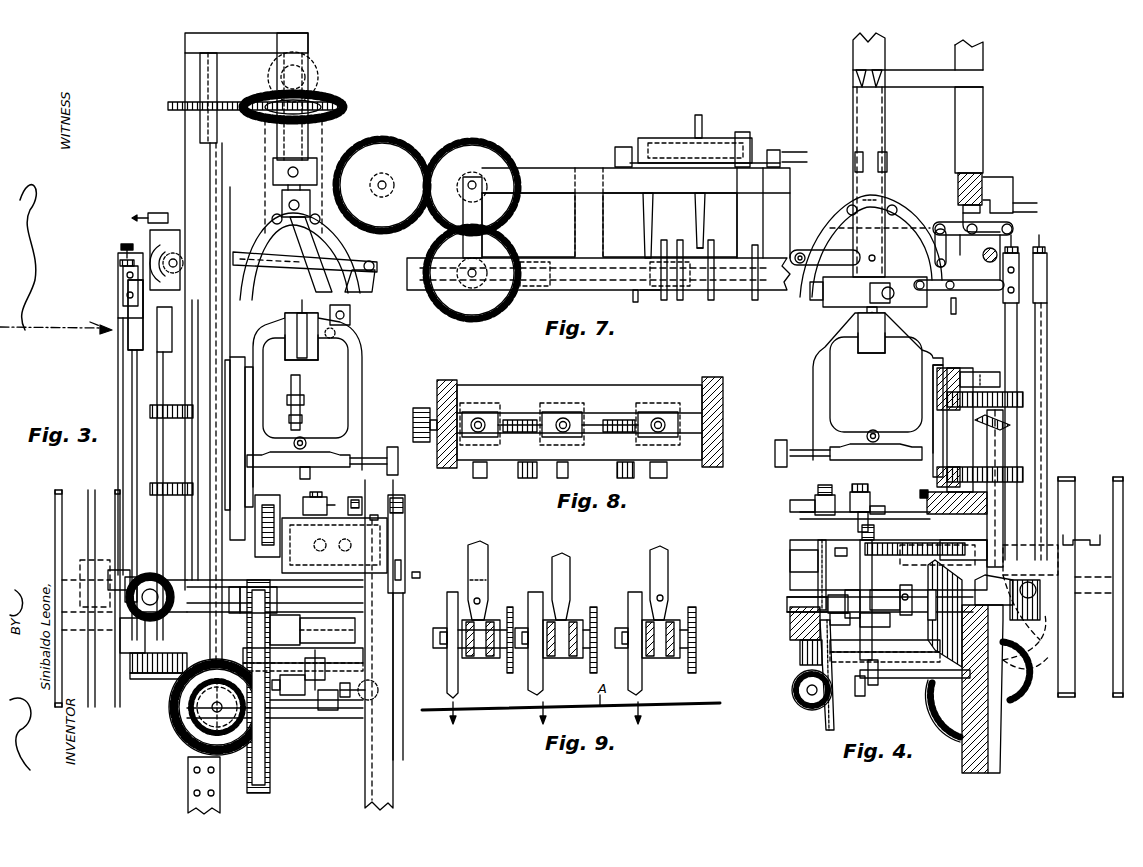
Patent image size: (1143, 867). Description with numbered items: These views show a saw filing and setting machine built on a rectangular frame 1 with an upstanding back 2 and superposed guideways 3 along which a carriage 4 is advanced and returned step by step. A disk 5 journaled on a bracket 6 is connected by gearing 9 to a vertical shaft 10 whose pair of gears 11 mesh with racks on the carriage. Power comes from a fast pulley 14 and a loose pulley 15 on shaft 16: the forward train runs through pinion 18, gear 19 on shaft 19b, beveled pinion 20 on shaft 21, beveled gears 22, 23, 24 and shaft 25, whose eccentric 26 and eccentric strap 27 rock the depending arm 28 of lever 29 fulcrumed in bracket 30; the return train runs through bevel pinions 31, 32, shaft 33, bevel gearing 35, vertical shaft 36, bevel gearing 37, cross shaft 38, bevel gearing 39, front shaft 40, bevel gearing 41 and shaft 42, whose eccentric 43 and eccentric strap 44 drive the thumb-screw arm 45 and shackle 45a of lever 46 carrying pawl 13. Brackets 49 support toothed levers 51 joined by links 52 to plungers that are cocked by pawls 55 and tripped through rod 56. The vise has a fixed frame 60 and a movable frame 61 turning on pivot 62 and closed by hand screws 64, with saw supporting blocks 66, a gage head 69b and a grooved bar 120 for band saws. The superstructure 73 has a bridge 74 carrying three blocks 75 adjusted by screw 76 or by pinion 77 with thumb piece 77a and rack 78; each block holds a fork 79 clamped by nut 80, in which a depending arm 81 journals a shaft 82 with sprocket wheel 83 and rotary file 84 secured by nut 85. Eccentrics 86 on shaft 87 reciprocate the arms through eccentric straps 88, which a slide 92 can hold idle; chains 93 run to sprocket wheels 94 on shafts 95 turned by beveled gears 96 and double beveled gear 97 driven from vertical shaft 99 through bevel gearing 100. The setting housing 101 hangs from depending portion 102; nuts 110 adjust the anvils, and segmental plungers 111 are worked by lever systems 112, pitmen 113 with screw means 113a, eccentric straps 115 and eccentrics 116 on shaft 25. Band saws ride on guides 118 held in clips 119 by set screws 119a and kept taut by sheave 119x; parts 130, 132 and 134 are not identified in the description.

In FIG. 3, the rectangular frame 1 is at (396, 742).
In FIG. 3, the upstanding back 2 is at (190, 450).
In FIG. 4, the upstanding back 2 is at (985, 175).
In FIG. 3, the horizontal superposed guideways 3 is at (238, 366).
In FIG. 4, the horizontal superposed guideways 3 is at (960, 470).
In FIG. 3, the carriage 4 is at (253, 436).
In FIG. 4, the carriage 4 is at (933, 436).
In FIG. 4, the disk 5 is at (836, 552).
In FIG. 4, the bracket 6 is at (800, 246).
In FIG. 4, the gearing 9 is at (924, 540).
In FIG. 4, the vertical shaft 10 is at (1000, 432).
In FIG. 3, the pair of gears 11 is at (150, 412).
In FIG. 4, the pair of gears 11 is at (1025, 470).
In FIG. 4, the pawl 13 is at (920, 500).
In FIG. 3, the fast pulley 14 is at (72, 500).
In FIG. 4, the fast pulley 14 is at (1103, 490).
In FIG. 3, the loose pulley 15 is at (103, 500).
In FIG. 4, the loose pulley 15 is at (1072, 490).
In FIG. 3, the shaft 16 is at (216, 612).
In FIG. 3, the pinion 18 is at (252, 612).
In FIG. 3, the gear 19 is at (268, 748).
In FIG. 3, the shaft 19b is at (332, 712).
In FIG. 3, the beveled pinion 20 is at (178, 730).
In FIG. 3, the horizontal shaft 21 is at (175, 693).
In FIG. 4, the beveled gear 22 is at (933, 703).
In FIG. 4, the beveled gear 23 is at (920, 676).
In FIG. 4, the beveled gear 24 is at (935, 655).
In FIG. 4, the horizontal shaft 25 is at (853, 615).
In FIG. 4, the eccentric 26 is at (830, 600).
In FIG. 4, the eccentric strap 27 is at (822, 590).
In FIG. 3, the depending arm 28 is at (355, 497).
In FIG. 4, the depending arm 28 is at (818, 551).
In FIG. 3, the lever 29 is at (362, 515).
In FIG. 4, the lever 29 is at (820, 520).
In FIG. 4, the bracket 30 is at (790, 556).
In FIG. 3, the bevel pinion 31 is at (125, 560).
In FIG. 3, the bevel pinion 32 is at (152, 575).
In FIG. 3, the horizontal shaft 33 is at (135, 612).
In FIG. 3, the bevel gearing 35 is at (132, 655).
In FIG. 3, the short vertical shaft 36 is at (120, 668).
In FIG. 3, the bevel gearing 37 is at (135, 673).
In FIG. 3, the horizontal cross shaft 38 is at (300, 680).
In FIG. 3, the bevel gearing 39 is at (352, 655).
In FIG. 3, the shaft 40 is at (392, 685).
In FIG. 4, the shaft 40 is at (798, 690).
In FIG. 4, the bevel gearing 41 is at (822, 700).
In FIG. 4, the shaft 42 is at (882, 682).
In FIG. 4, the eccentric 43 is at (870, 660).
In FIG. 4, the eccentric strap 44 is at (876, 615).
In FIG. 3, the arm 45 is at (320, 497).
In FIG. 4, the arm 45 is at (860, 522).
In FIG. 4, the shackle 45a is at (878, 527).
In FIG. 4, the lever 46 is at (870, 498).
In FIG. 3, the brackets 49 is at (270, 630).
In FIG. 3, the toothed lever 51 is at (318, 645).
In FIG. 4, the links 52 is at (935, 550).
In FIG. 3, the pawl 55 is at (276, 510).
In FIG. 4, the rod 56 is at (928, 500).
In FIG. 3, the fixed frame 60 is at (263, 405).
In FIG. 4, the fixed frame 60 is at (925, 390).
In FIG. 3, the movable frame 61 is at (357, 402).
In FIG. 4, the movable frame 61 is at (813, 396).
In FIG. 3, the pivot 62 is at (298, 450).
In FIG. 4, the pivot 62 is at (878, 426).
In FIG. 3, the hand screws 64 is at (396, 470).
In FIG. 4, the hand screws 64 is at (778, 466).
In FIG. 3, the saw supporting blocks 66 is at (292, 388).
In FIG. 3, the tapered head 69b is at (338, 335).
In FIG. 3, the superstructure 73 is at (312, 63).
In FIG. 4, the superstructure 73 is at (853, 66).
In FIG. 8, the horizontal bridge 74 is at (563, 387).
In FIG. 8, the blocks 75 is at (500, 414).
In FIG. 8, the screw 76 is at (420, 408).
In FIG. 8, the pinion 77 is at (618, 416).
In FIG. 8, the thumb piece 77a is at (630, 476).
In FIG. 8, the rack 78 is at (612, 435).
In FIG. 3, the fork 79 is at (282, 200).
In FIG. 8, the fork 79 is at (660, 412).
In FIG. 8, the nut 80 is at (568, 412).
In FIG. 3, the depending arm 81 is at (340, 252).
In FIG. 9, the depending arm 81 is at (480, 658).
In FIG. 9, the shaft 82 is at (433, 640).
In FIG. 7, the sprocket wheel 83 is at (708, 295).
In FIG. 9, the sprocket wheel 83 is at (510, 612).
In FIG. 3, the rotary file 84 is at (338, 318).
In FIG. 7, the rotary file 84 is at (636, 302).
In FIG. 9, the rotary file 84 is at (448, 600).
In FIG. 9, the nut 85 is at (444, 648).
In FIG. 3, the eccentric 86 is at (160, 262).
In FIG. 3, the horizontal shaft 87 is at (118, 293).
In FIG. 3, the eccentric strap 88 is at (266, 268).
In FIG. 7, the eccentric strap 88 is at (644, 212).
In FIG. 9, the eccentric strap 88 is at (488, 572).
In FIG. 7, the slide 92 is at (704, 140).
In FIG. 3, the sprocket chains 93 is at (322, 150).
In FIG. 3, the sprocket wheels 94 is at (330, 92).
In FIG. 7, the horizontal shafts 95 is at (600, 290).
In FIG. 7, the beveled gears 96 is at (512, 256).
In FIG. 3, the double beveled gear 97 is at (250, 104).
In FIG. 7, the double beveled gear 97 is at (446, 245).
In FIG. 3, the vertical shaft 99 is at (382, 182).
In FIG. 3, the bevel gearing 100 is at (175, 682).
In FIG. 4, the housing 101 is at (838, 294).
In FIG. 3, the depending portion 102 is at (283, 210).
In FIG. 4, the depending portion 102 is at (880, 183).
In FIG. 3, the nuts 110 is at (296, 325).
In FIG. 3, the segmental plungers 111 is at (258, 240).
In FIG. 4, the segmental plungers 111 is at (835, 207).
In FIG. 3, the lever systems 112 is at (110, 348).
In FIG. 4, the lever systems 112 is at (948, 285).
In FIG. 3, the pitmen 113 is at (160, 375).
In FIG. 4, the pitmen 113 is at (1005, 351).
In FIG. 3, the screw means 113a is at (130, 262).
In FIG. 4, the screw means 113a is at (1012, 247).
In FIG. 4, the eccentric straps 115 is at (945, 550).
In FIG. 4, the eccentrics 116 is at (884, 600).
In FIG. 3, the guides 118 is at (400, 547).
In FIG. 3, the clips 119 is at (400, 559).
In FIG. 3, the set screw 119a is at (416, 578).
In FIG. 3, the sheave 119x is at (56, 338).
In FIG. 4, the bar 120 is at (882, 320).
In FIG. 4, the pin 130 is at (955, 310).
In FIG. 3, the rod 132 is at (118, 368).
In FIG. 4, the rod 132 is at (1047, 386).
In FIG. 3, the knob 134 is at (126, 245).